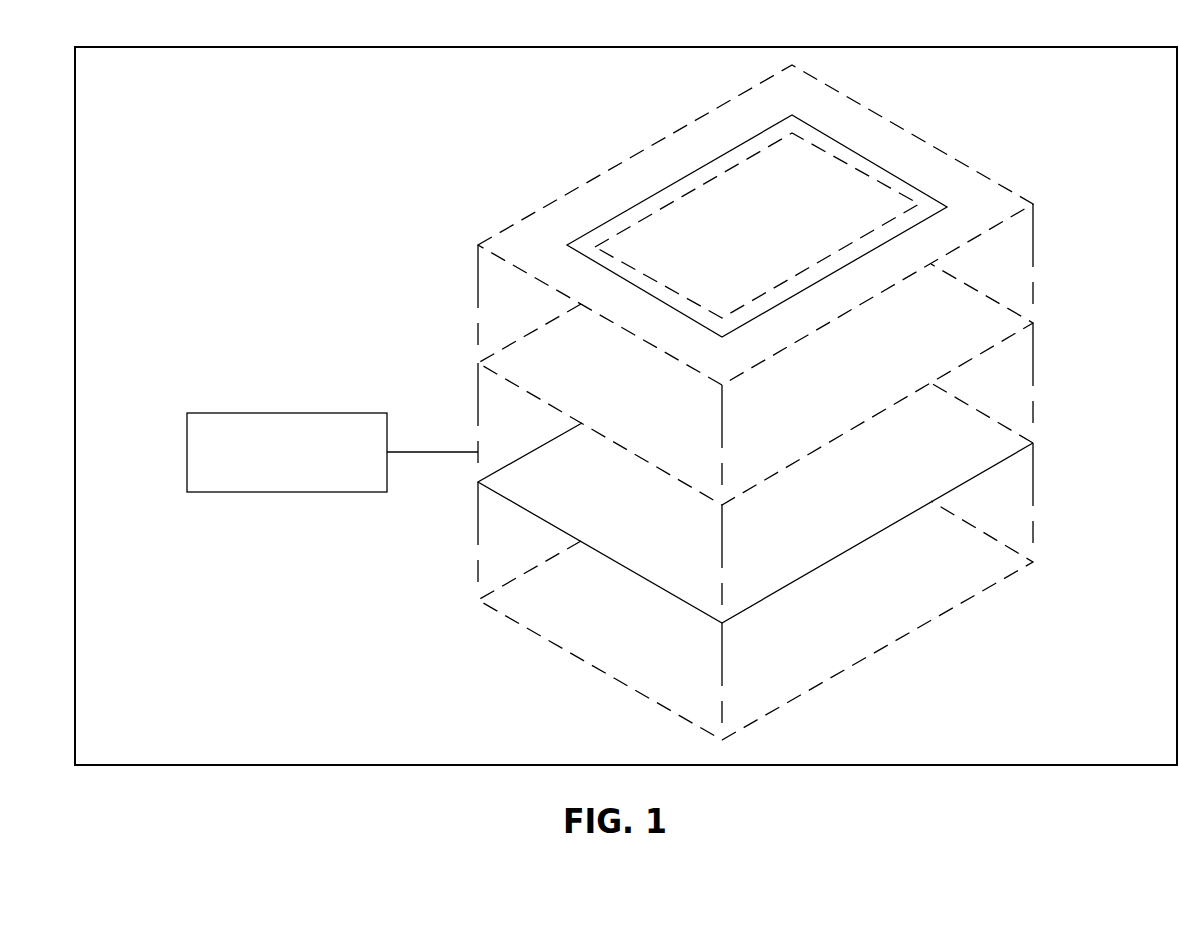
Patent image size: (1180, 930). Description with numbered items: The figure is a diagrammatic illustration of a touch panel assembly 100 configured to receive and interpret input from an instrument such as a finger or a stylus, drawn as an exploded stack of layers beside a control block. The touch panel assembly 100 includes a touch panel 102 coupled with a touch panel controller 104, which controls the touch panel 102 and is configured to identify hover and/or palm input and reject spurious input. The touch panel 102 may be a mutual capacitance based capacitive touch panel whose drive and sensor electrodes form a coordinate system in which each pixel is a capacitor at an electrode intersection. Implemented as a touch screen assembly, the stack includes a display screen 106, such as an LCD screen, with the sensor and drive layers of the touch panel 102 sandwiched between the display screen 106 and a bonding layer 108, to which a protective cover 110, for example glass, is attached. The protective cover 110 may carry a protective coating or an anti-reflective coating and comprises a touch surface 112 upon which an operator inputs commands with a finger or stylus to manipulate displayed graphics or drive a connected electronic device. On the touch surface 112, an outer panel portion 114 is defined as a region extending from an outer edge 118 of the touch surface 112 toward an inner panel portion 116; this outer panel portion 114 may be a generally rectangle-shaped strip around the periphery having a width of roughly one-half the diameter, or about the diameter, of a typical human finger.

The touch panel assembly 100 is at (903, 47).
The touch panel 102 is at (1012, 430).
The touch panel controller 104 is at (287, 413).
The display screen 106 is at (1012, 548).
The bonding layer 108 is at (1012, 312).
The protective cover 110 is at (1005, 190).
The touch surface 112 is at (662, 237).
The outer panel portion 114 is at (835, 148).
The inner panel portion 116 is at (867, 213).
The outer edge 118 is at (720, 157).